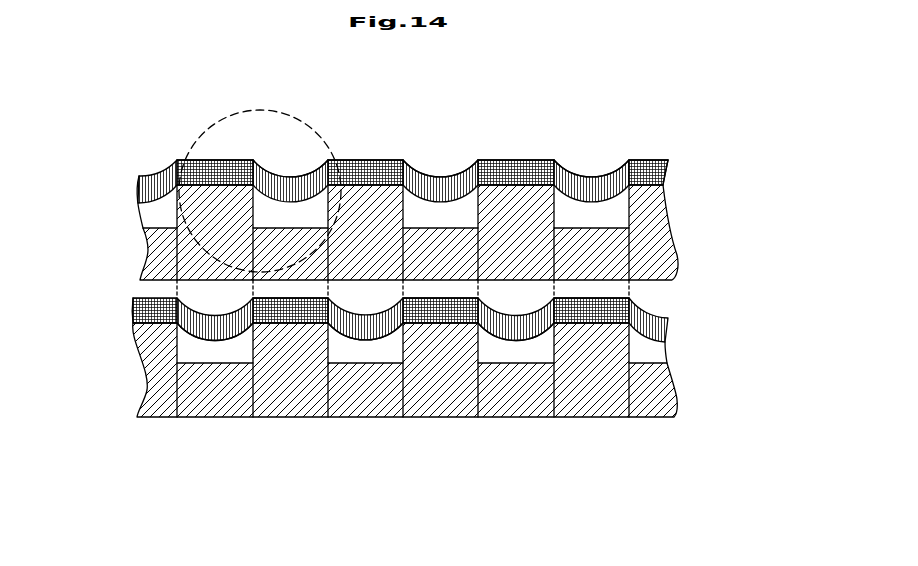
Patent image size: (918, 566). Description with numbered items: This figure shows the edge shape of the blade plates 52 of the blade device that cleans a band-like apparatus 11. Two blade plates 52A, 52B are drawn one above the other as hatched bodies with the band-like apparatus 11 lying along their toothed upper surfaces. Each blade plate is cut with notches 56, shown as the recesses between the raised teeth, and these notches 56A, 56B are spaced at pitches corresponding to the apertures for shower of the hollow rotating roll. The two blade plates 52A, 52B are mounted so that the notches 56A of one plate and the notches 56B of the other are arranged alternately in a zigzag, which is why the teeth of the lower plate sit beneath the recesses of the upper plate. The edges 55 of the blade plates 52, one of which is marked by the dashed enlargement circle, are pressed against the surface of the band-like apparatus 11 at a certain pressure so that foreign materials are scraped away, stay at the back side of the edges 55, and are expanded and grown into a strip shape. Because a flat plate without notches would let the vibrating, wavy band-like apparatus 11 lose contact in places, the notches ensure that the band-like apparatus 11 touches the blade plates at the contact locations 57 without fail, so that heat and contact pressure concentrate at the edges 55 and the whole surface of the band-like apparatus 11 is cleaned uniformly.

The band-like apparatus 11 is at (668, 172).
The blade plates 52 is at (406, 288).
The blade plate 52A is at (648, 240).
The blade plate 52B is at (657, 397).
The edges 55 is at (189, 150).
The notches 56 is at (403, 327).
The notch 56A is at (440, 215).
The notch 56B is at (360, 343).
The locations 57 is at (225, 160).